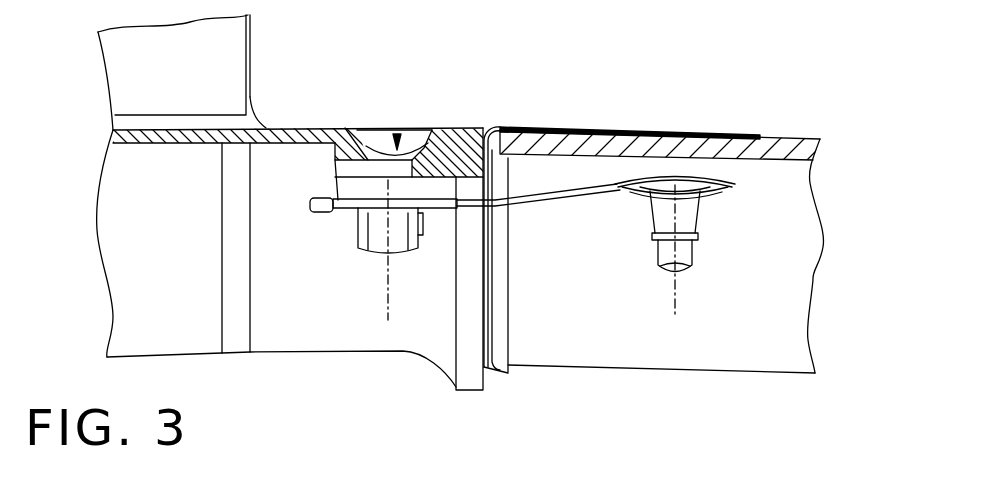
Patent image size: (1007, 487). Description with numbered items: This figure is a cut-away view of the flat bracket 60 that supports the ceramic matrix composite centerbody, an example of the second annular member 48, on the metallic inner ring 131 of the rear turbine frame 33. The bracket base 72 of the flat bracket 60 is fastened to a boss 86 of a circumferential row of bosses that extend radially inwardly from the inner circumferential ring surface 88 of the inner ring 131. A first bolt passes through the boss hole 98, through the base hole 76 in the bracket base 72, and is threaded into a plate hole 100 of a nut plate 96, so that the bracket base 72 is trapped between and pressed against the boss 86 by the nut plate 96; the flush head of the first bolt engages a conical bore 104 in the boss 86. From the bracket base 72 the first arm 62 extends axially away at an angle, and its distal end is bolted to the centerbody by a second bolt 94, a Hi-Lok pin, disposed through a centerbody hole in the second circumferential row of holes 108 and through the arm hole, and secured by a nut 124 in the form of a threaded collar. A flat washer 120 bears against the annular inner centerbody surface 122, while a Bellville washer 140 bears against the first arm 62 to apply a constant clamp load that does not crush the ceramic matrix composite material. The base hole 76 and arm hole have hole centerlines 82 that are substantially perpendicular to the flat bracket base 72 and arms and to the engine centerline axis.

The rear turbine frame 33 is at (253, 32).
The inner ring 131 is at (272, 128).
The conical bores 104 is at (358, 126).
The bracket base 72 is at (350, 204).
The boss holes 98 is at (397, 140).
The base hole 76 is at (395, 206).
The first arm 62 is at (578, 190).
The second circumferential row of holes 108 is at (623, 130).
The second annular member 48 is at (773, 140).
The annular inner centerbody surface 122 is at (781, 160).
The flat washer 120 is at (737, 189).
The Bellville washer 140 is at (730, 198).
The flat bracket 60 is at (540, 204).
The nut 124 is at (660, 218).
The second bolts 94 is at (690, 268).
The hole centerlines 82 is at (388, 297).
The inner circumferential ring surface 88 is at (298, 143).
The bosses 86 is at (337, 163).
The nut plate 96 is at (337, 213).
The plate holes 100 is at (352, 240).